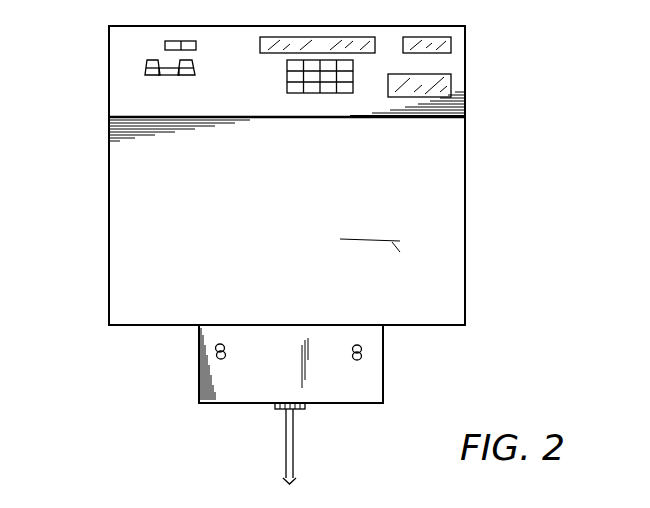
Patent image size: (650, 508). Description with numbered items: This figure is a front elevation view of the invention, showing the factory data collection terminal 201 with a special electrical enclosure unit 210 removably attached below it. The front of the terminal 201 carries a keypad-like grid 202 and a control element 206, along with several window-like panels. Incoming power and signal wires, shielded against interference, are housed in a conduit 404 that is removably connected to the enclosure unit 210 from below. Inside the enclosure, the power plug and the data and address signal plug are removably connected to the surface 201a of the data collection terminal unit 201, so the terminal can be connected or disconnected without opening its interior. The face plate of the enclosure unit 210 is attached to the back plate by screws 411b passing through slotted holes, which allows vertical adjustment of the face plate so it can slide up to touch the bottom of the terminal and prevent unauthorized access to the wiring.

The factory data collection terminal 201 is at (467, 50).
The surface of data collection terminal unit 201a is at (353, 325).
The keypad 202 is at (287, 80).
The switch 206 is at (145, 68).
The electrical enclosure unit 210 is at (383, 370).
The screws 411b is at (354, 345).
The conduit 404 is at (293, 452).